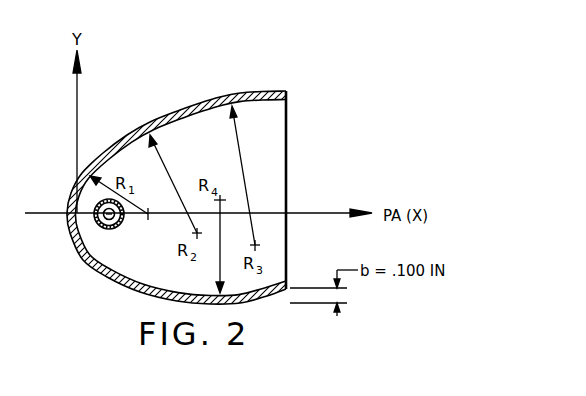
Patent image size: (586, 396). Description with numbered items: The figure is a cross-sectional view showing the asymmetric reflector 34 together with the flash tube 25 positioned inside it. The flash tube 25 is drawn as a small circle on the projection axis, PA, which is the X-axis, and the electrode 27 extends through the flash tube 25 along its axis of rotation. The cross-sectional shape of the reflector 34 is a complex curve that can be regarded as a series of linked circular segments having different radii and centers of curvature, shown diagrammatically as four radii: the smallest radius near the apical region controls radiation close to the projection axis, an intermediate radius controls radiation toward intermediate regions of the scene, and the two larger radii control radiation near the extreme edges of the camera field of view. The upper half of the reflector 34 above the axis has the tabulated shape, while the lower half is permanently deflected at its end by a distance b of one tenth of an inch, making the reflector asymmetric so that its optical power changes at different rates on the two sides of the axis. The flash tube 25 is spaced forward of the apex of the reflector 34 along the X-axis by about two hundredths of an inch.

The asymmetric reflector 34 is at (240, 92).
The flash tube 25 is at (121, 221).
The electrode 27 is at (110, 221).